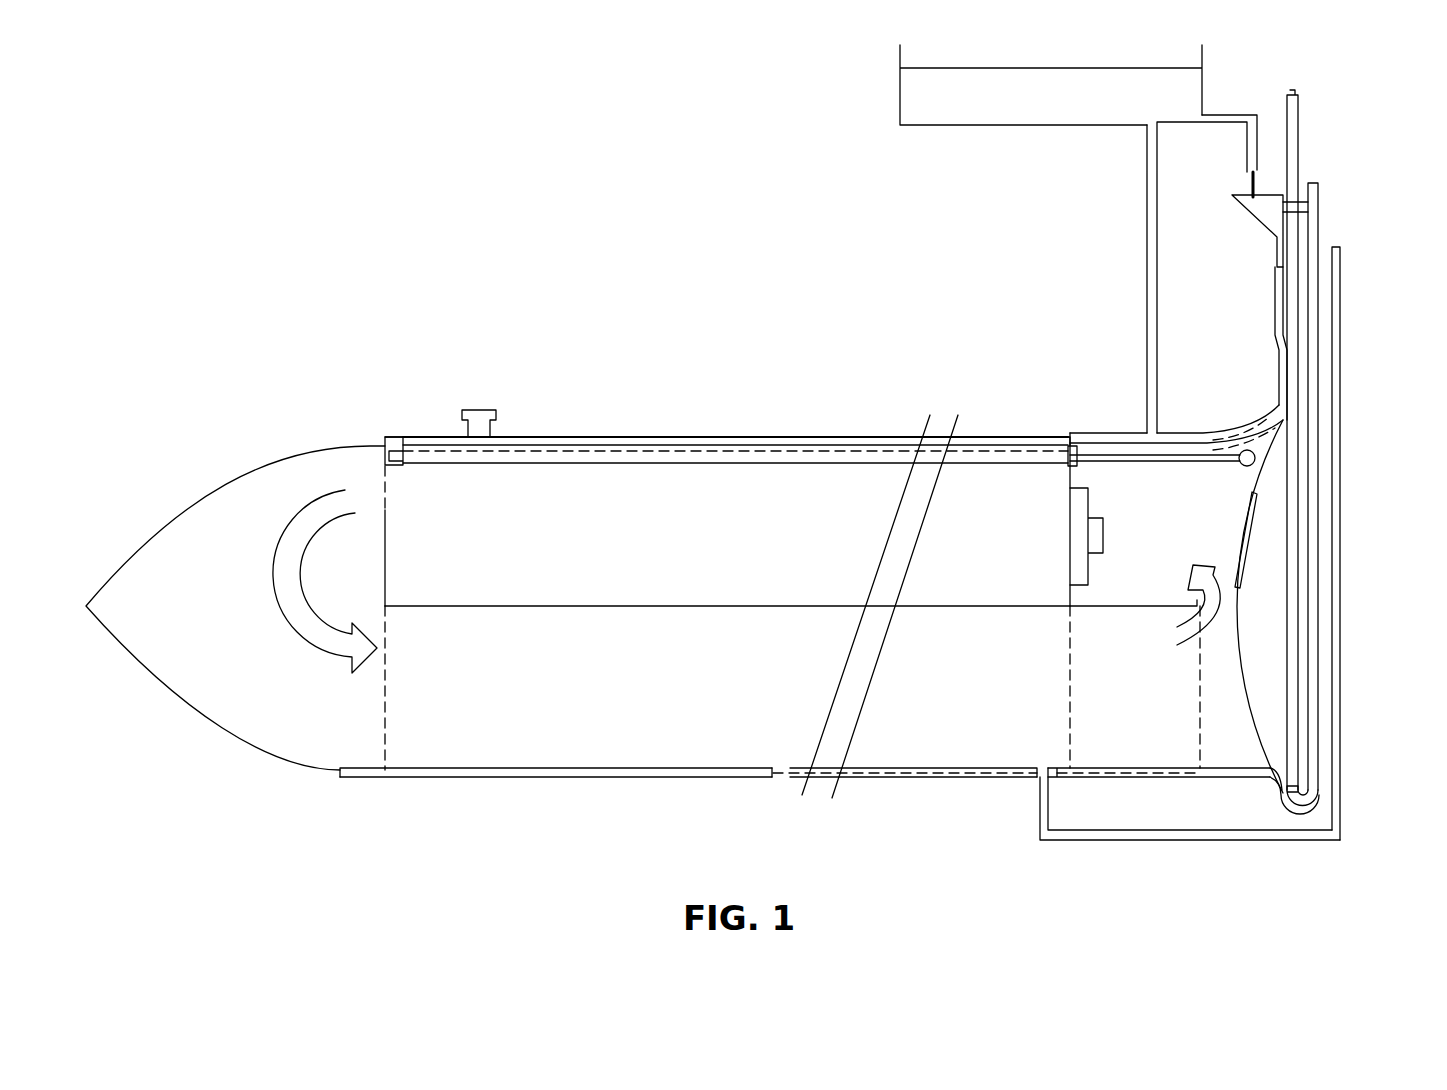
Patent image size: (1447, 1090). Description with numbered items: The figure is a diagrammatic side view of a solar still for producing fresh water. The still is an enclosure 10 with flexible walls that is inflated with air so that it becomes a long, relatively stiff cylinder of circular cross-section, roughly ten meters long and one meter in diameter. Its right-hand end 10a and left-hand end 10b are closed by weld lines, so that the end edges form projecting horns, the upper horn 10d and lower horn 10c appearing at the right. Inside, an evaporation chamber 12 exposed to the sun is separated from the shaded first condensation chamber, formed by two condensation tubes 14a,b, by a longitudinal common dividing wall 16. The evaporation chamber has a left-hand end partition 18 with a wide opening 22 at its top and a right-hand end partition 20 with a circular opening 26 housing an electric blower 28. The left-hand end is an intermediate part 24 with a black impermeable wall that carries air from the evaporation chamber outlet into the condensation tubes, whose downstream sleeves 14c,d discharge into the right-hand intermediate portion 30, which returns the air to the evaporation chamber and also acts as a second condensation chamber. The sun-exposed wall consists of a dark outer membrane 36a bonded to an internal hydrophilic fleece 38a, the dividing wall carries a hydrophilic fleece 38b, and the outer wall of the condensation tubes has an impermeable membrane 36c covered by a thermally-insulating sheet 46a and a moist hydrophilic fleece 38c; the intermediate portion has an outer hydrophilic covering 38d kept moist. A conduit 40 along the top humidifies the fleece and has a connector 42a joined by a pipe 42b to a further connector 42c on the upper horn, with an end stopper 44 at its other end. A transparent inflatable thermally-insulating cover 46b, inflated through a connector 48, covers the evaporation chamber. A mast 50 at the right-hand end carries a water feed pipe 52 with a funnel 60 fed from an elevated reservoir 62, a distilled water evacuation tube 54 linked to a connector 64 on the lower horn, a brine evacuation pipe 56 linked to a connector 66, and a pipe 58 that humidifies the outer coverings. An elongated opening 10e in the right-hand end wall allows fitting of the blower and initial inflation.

The enclosure 10 is at (282, 294).
The right-hand end 10a is at (1243, 662).
The left-hand end 10b is at (160, 530).
The lower horn 10c is at (1245, 755).
The upper horn 10d is at (1283, 408).
The elongated opening 10e is at (1243, 565).
The evaporation chamber 12 is at (555, 482).
The condensation tubes 14a,b is at (458, 745).
The sleeves 14c,d is at (1113, 745).
The common dividing wall 16 is at (600, 612).
The left-hand end partition 18 is at (383, 525).
The right-hand end partition 20 is at (1060, 672).
The wide opening 22 is at (383, 478).
The intermediate part 24 is at (218, 619).
The circular opening 26 is at (1075, 545).
The electric blower 28 is at (1097, 525).
The intermediate portion 30 is at (1138, 578).
The outer membrane 36a is at (776, 443).
The impermeable membrane 36c is at (690, 778).
The hydrophilic fleece 38a is at (634, 446).
The hydrophilic fleece 38b is at (1243, 423).
The moist hydrophilic fleece 38c is at (787, 775).
The outer hydrophilic covering 38d is at (1170, 775).
The conduit 40 is at (707, 455).
The connector 42a is at (1067, 454).
The pipe 42b is at (1193, 465).
The further connector 42c is at (1256, 455).
The end stopper 44 is at (400, 458).
The thermally-insulating sheet 46a is at (620, 778).
The thermally-insulating cover 46b is at (850, 435).
The connector 48 is at (478, 410).
The mast 50 is at (1300, 120).
The water feed pipe 52 is at (1273, 305).
The distilled water evacuation tube 54 is at (1320, 205).
The brine evacuation pipe 56 is at (1342, 275).
The pipe 58 is at (1146, 265).
The funnel 60 is at (1258, 235).
The reservoir 62 is at (1060, 106).
The connector 64 is at (1280, 808).
The connector 66 is at (1035, 773).